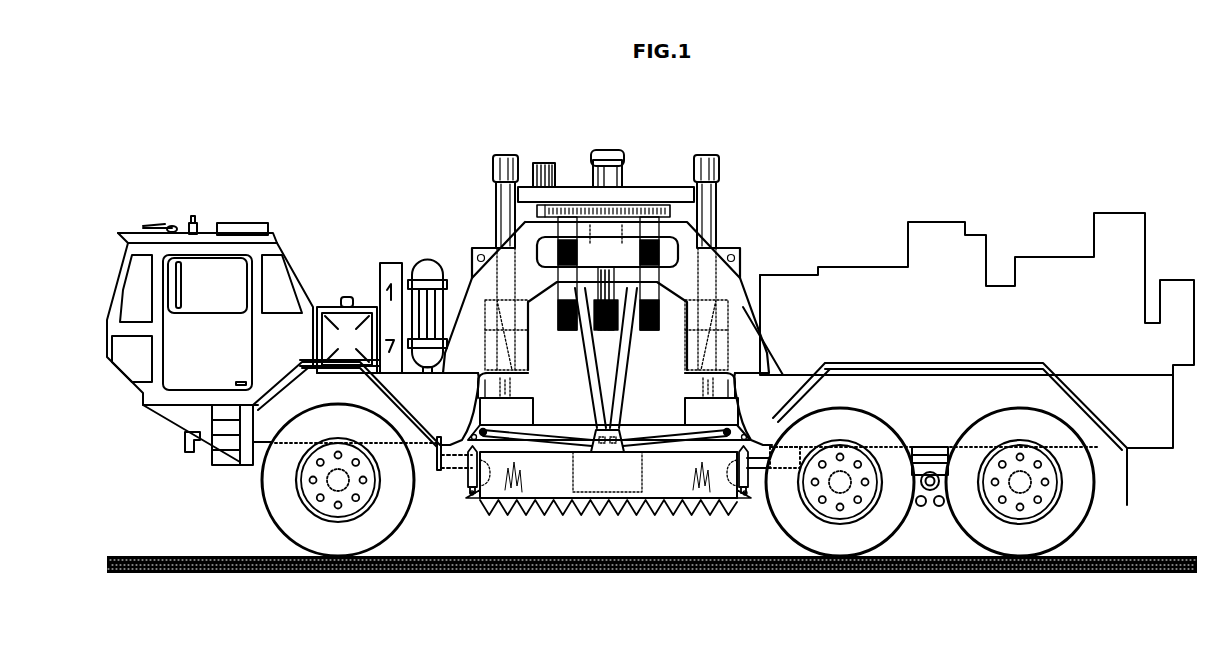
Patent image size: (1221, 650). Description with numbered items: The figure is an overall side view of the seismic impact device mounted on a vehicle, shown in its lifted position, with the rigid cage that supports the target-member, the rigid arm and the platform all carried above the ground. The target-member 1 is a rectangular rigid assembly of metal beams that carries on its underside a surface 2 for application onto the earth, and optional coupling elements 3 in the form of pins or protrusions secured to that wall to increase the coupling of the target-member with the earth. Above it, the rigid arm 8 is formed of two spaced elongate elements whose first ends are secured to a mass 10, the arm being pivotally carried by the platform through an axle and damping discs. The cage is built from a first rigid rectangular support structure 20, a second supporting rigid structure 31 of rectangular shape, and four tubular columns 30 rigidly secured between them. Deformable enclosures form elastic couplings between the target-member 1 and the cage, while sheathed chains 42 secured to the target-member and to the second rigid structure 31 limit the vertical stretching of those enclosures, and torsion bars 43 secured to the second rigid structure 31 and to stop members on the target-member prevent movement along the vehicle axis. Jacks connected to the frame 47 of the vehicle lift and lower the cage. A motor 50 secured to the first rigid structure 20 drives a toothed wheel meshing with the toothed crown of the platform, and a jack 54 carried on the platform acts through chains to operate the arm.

The target-member 1 is at (651, 525).
The surface for application onto the earth 2 is at (679, 507).
The coupling elements 3 is at (700, 509).
The rigid arm 8 is at (643, 350).
The mass 10 is at (634, 430).
The first rigid rectangular support structure 20 is at (656, 187).
The tubular columns 30 is at (485, 205).
The second supporting rigid structure 31 is at (535, 408).
The sheathed chains 42 is at (466, 479).
The torsion bars 43 is at (576, 425).
The frame of a vehicle 47 is at (745, 280).
The motor 50 is at (545, 152).
The jack 54 is at (631, 149).